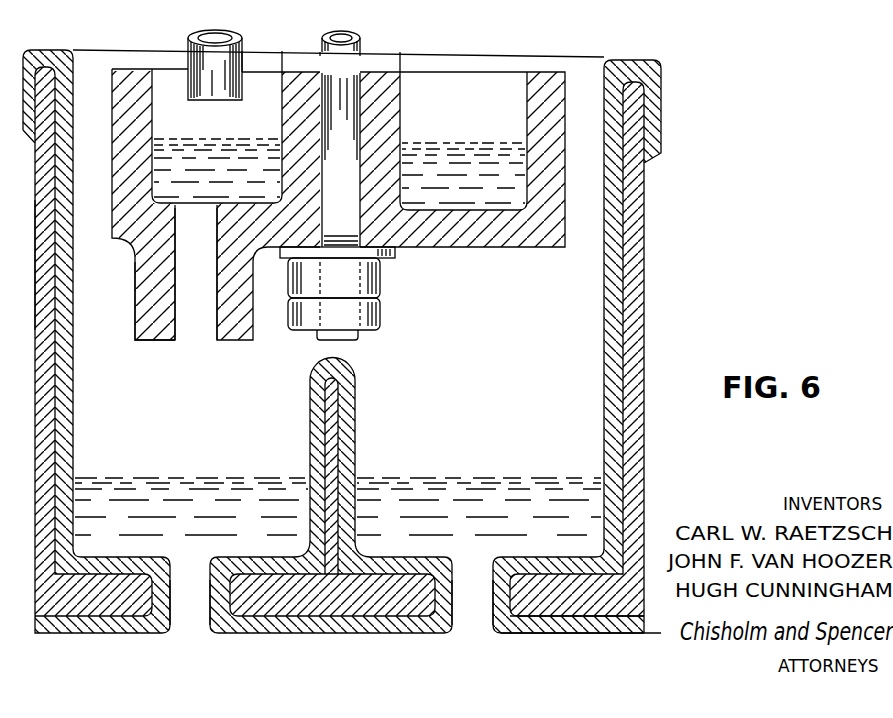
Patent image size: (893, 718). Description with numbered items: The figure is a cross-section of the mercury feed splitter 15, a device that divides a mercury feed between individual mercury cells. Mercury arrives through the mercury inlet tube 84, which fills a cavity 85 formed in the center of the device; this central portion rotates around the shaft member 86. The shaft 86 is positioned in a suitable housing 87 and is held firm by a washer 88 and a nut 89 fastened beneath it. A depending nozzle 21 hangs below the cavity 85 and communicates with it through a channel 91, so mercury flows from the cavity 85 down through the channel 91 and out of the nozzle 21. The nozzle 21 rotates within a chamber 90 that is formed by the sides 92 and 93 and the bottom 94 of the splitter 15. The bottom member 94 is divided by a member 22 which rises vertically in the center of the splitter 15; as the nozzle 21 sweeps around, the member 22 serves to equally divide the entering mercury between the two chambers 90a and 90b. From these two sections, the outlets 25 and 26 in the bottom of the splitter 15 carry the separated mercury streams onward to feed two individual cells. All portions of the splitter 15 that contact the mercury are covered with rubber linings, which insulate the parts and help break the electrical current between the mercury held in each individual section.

The mercury feed splitter 15 is at (682, 363).
The depending nozzle 21 is at (133, 329).
The dividing member 22 is at (350, 365).
The outlet 25 is at (190, 617).
The outlet 26 is at (475, 617).
The mercury inlet tube 84 is at (190, 49).
The cavity 85 is at (258, 87).
The shaft member 86 is at (356, 50).
The housing 87 is at (395, 103).
The washer 88 is at (396, 253).
The nut 89 is at (376, 283).
The chamber 90 is at (583, 80).
The chamber section 90a is at (191, 473).
The chamber section 90b is at (479, 473).
The channel 91 is at (197, 332).
The side 92 is at (644, 263).
The side 93 is at (38, 262).
The bottom member 94 is at (603, 602).